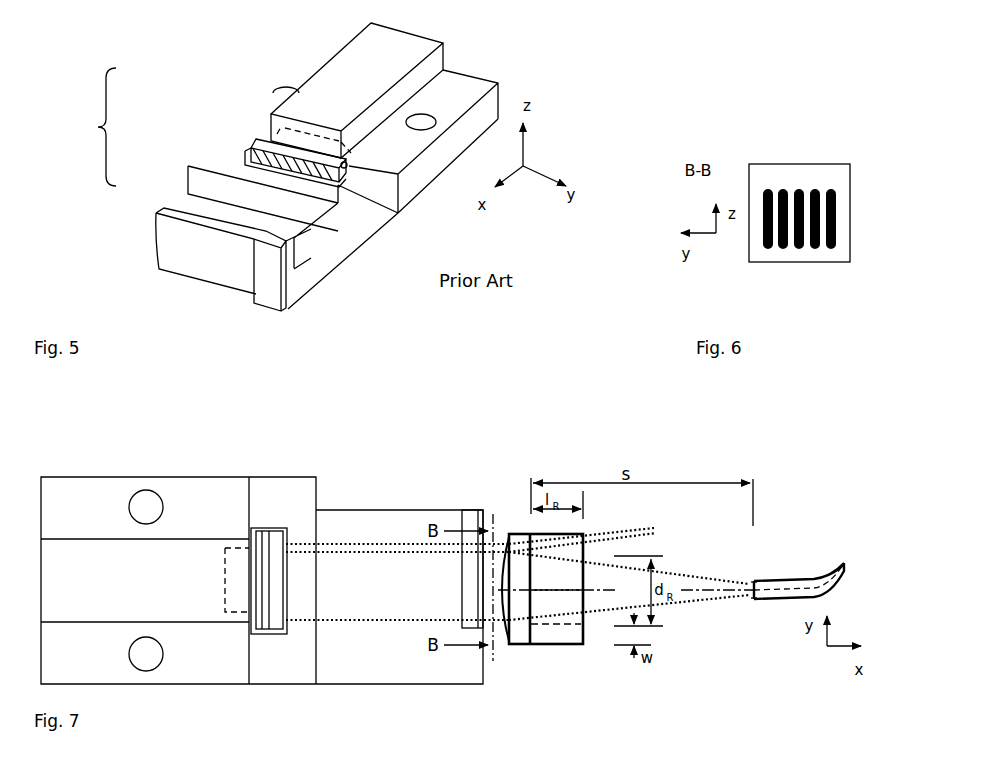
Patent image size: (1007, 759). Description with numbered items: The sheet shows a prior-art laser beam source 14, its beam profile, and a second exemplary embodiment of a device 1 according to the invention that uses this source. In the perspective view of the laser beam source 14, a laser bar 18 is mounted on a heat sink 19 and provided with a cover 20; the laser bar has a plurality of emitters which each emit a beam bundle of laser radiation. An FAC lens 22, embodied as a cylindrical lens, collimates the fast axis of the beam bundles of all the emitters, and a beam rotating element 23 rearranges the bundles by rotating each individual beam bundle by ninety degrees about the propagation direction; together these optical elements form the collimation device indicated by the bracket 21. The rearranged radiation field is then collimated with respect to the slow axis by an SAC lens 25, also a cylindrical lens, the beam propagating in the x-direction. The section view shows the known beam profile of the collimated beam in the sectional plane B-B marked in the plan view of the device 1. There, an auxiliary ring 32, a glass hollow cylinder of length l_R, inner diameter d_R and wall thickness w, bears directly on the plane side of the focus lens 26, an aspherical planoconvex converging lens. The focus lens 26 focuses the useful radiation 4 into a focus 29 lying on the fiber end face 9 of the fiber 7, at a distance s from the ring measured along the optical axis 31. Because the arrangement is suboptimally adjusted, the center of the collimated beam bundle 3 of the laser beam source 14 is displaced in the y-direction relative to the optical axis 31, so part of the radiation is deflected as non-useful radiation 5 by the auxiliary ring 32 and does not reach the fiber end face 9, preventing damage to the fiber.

In FIG. 7, the device 1 is at (818, 494).
In FIG. 7, the collimated beam bundle 3 is at (500, 627).
In FIG. 7, the useful radiation 4 is at (675, 602).
In FIG. 7, the non-useful radiation 5 is at (650, 523).
In FIG. 7, the optical fiber 7 is at (813, 573).
In FIG. 7, the fiber end face 9 is at (748, 582).
In FIG. 5, the laser beam source 14 is at (519, 36).
In FIG. 7, the laser beam source 14 is at (38, 455).
In FIG. 5, the laser bar 18 is at (268, 138).
In FIG. 7, the laser bar 18 is at (240, 568).
In FIG. 5, the heat sink 19 is at (463, 80).
In FIG. 7, the heat sink 19 is at (103, 483).
In FIG. 5, the cover 20 is at (322, 80).
In FIG. 7, the cover 20 is at (160, 548).
In FIG. 5, the holder assembly 21 is at (89, 127).
In FIG. 5, the FAC lens 22 is at (248, 145).
In FIG. 7, the FAC lens 22 is at (255, 537).
In FIG. 5, the beam rotating element 23 is at (247, 152).
In FIG. 7, the beam rotating element 23 is at (275, 532).
In FIG. 5, the SAC lens 25 is at (180, 212).
In FIG. 7, the SAC lens 25 is at (470, 520).
In FIG. 7, the focus lens 26 is at (517, 532).
In FIG. 7, the focus 29 is at (752, 597).
In FIG. 7, the optical axis 31 is at (540, 585).
In FIG. 7, the auxiliary ring 32 is at (557, 635).